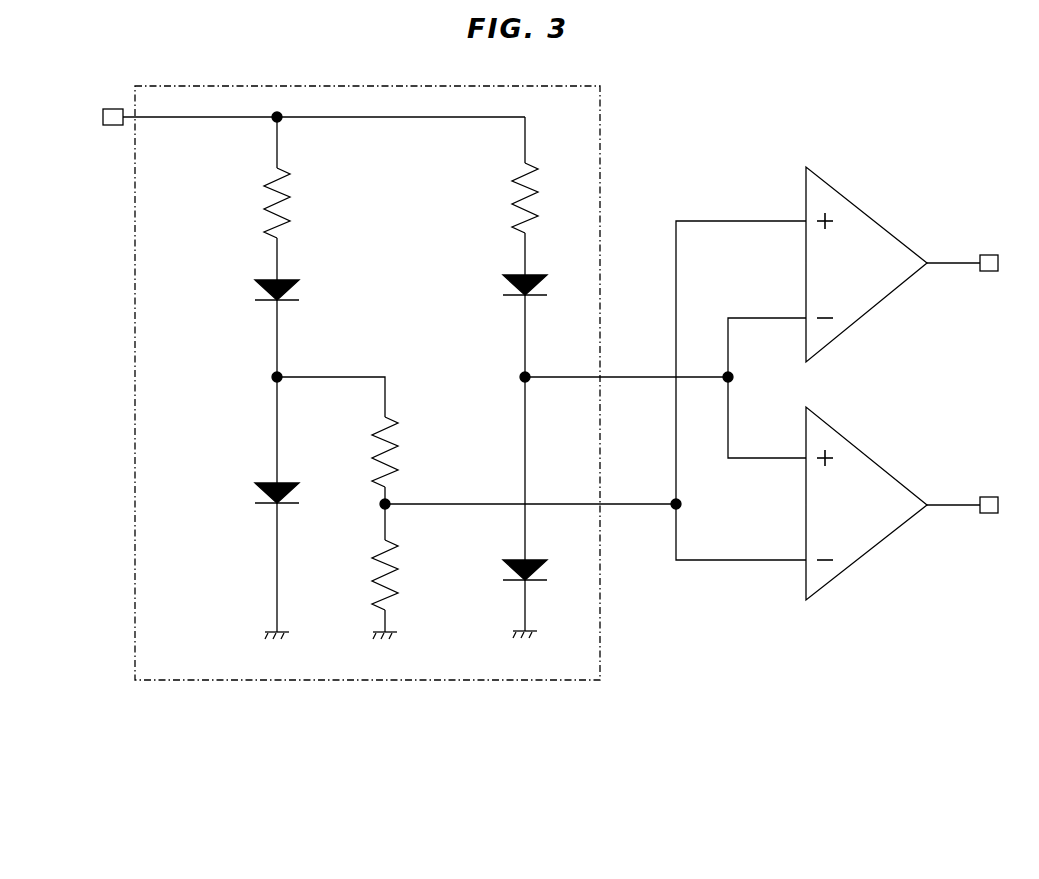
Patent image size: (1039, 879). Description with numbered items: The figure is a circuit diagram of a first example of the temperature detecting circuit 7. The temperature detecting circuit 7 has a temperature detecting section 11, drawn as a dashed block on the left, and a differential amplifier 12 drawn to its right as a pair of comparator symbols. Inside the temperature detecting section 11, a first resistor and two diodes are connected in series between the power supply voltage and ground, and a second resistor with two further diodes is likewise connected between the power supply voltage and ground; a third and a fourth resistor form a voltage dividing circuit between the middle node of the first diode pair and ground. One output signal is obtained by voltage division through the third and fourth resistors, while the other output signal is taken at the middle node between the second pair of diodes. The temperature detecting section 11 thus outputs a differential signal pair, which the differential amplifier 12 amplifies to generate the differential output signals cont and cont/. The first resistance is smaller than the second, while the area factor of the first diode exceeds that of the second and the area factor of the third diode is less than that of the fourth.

The temperature detecting circuit 7 is at (432, 828).
The temperature detecting section 11 is at (473, 673).
The differential amplifier 12 is at (868, 313).